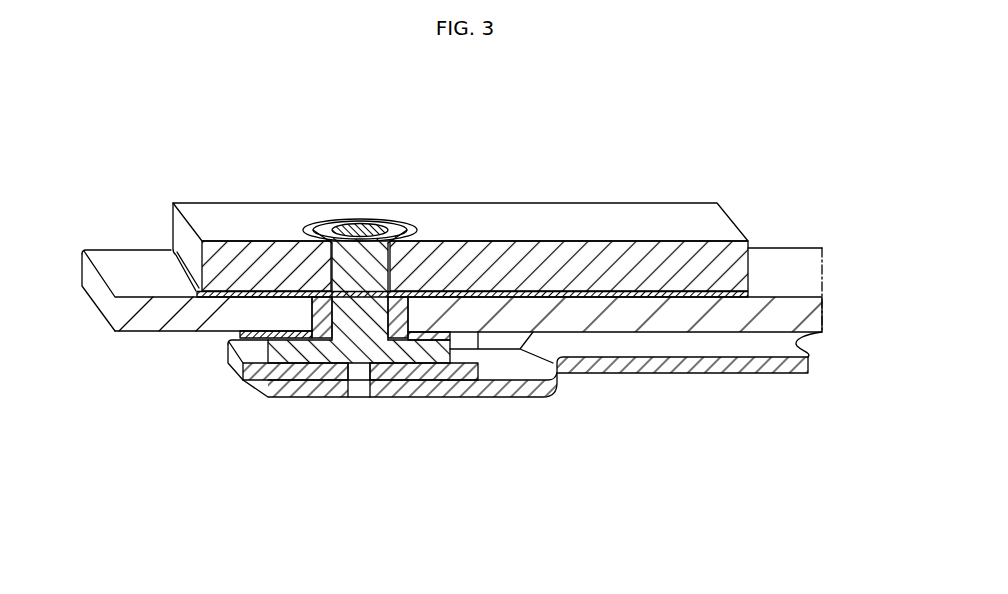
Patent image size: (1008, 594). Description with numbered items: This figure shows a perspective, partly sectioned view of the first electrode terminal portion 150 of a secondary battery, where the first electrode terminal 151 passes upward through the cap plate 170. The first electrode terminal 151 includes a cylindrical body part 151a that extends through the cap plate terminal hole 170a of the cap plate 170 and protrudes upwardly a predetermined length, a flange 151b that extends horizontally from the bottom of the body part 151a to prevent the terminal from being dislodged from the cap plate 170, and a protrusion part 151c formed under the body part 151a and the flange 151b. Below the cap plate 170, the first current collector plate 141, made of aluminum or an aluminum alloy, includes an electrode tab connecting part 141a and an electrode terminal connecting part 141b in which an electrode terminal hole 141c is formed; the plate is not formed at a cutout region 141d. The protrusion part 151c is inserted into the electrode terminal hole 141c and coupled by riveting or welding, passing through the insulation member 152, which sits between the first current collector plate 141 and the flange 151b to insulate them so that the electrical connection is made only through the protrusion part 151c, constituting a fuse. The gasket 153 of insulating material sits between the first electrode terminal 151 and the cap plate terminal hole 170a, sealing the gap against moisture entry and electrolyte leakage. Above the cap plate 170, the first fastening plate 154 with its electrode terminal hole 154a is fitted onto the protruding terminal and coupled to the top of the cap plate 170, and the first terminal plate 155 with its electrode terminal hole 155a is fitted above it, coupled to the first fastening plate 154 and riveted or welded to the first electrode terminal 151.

The first current collector plate 141 is at (400, 134).
The electrode tab connecting part 141a is at (660, 360).
The electrode terminal connecting part 141b is at (502, 358).
The electrode terminal hole 141c is at (432, 331).
The cutout region 141d is at (824, 346).
The first electrode terminal portion 150 is at (337, 134).
The first electrode terminal 151 is at (493, 463).
The body part 151a is at (353, 272).
The flange 151b is at (455, 347).
The protrusion part 151c is at (364, 386).
The insulation member 152 is at (253, 382).
The gasket 153 is at (244, 339).
The first fastening plate 154 is at (220, 278).
The electrode terminal hole 154a is at (283, 292).
The first terminal plate 155 is at (362, 214).
The electrode terminal hole 155a is at (333, 272).
The cap plate 170 is at (120, 256).
The cap plate terminal hole 170a is at (277, 320).